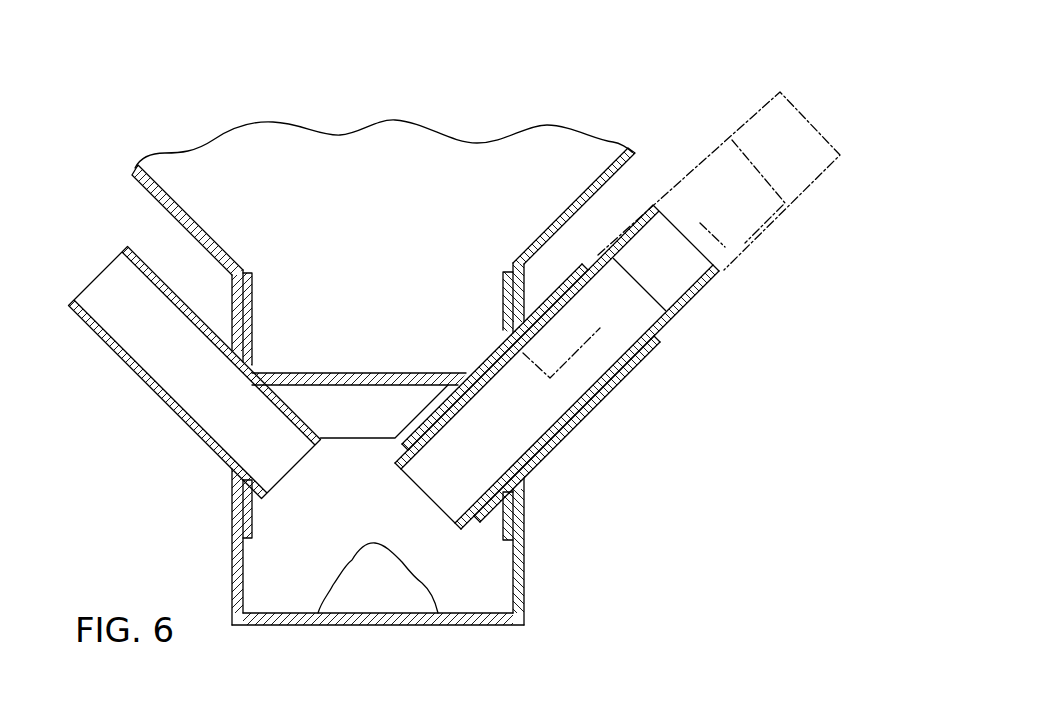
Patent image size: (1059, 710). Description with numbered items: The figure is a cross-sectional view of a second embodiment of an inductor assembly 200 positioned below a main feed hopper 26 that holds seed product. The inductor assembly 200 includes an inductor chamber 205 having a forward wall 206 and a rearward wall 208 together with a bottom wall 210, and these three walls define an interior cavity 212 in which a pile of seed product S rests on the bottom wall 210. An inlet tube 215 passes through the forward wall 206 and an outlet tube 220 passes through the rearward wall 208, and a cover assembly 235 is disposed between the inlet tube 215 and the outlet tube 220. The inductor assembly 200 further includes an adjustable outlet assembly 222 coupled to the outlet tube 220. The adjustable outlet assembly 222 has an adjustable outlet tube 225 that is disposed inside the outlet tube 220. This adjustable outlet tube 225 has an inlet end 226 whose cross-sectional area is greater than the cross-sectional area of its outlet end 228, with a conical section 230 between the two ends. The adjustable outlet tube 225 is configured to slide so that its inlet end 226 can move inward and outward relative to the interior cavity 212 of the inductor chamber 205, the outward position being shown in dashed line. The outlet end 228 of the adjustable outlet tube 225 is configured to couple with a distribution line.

The main feed hopper 26 is at (141, 187).
The inductor assembly 200 is at (656, 480).
The inductor chamber 205 is at (392, 464).
The forward wall 206 is at (233, 508).
The rearward wall 208 is at (526, 519).
The bottom wall 210 is at (373, 628).
The interior cavity 212 is at (491, 578).
The inlet tube 215 is at (121, 366).
The outlet tube 220 is at (624, 369).
The adjustable outlet assembly 222 is at (658, 291).
The adjustable outlet tube 225 is at (546, 433).
The inlet end 226 is at (600, 338).
The outlet end 228 is at (703, 299).
The conical section 230 is at (664, 334).
The cover assembly 235 is at (360, 427).
The sample S is at (384, 586).